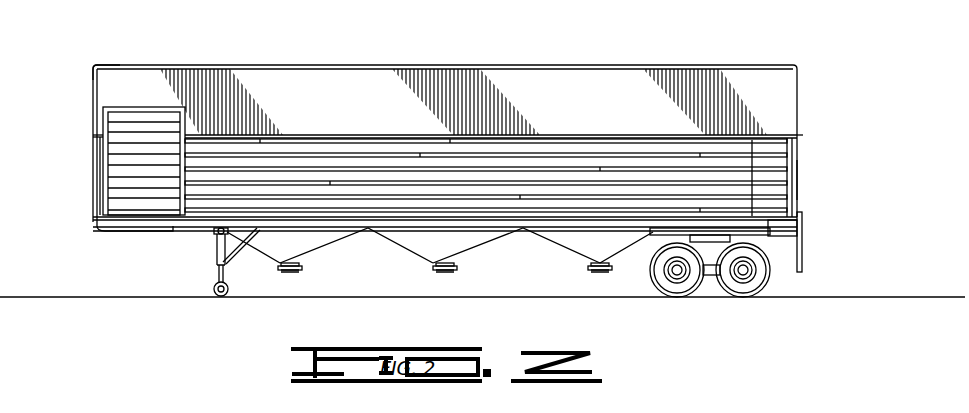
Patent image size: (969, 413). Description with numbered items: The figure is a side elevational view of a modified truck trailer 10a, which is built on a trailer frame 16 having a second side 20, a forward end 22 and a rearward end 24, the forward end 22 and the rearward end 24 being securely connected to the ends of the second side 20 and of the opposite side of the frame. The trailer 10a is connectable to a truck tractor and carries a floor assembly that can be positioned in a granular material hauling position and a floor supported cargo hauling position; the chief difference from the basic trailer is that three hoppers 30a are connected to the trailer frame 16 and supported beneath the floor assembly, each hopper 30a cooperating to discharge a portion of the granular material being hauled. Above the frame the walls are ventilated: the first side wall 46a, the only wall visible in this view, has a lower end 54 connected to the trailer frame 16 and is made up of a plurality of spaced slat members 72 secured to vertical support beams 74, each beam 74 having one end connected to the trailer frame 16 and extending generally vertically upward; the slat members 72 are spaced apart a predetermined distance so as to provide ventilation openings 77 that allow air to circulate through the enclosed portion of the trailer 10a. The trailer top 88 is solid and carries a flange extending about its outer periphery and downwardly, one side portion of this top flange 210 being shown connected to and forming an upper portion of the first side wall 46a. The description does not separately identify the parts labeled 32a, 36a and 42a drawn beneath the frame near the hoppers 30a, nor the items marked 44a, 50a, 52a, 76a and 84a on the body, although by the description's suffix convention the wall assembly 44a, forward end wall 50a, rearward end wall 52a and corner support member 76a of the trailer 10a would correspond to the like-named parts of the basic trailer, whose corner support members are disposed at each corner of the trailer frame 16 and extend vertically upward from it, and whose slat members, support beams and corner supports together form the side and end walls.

The modified trailer 10a is at (275, 58).
The trailer frame 16 is at (793, 226).
The second side 20 is at (552, 223).
The forward end 22 is at (92, 219).
The rearward end 24 is at (783, 222).
The hoppers 30a is at (323, 247).
The brace rod 32a is at (272, 246).
The foot pad 36a is at (277, 268).
The pad base 42a is at (283, 273).
The rear edge 44a is at (805, 142).
The first side wall 46a is at (558, 100).
The front wall 50a is at (75, 152).
The rear wall 52a is at (808, 161).
The lower end 54 is at (198, 214).
The slat members 72 is at (752, 155).
The vertical support beams 74 is at (290, 156).
The corner post 76a is at (98, 173).
The ventilation openings 77 is at (410, 157).
The side door 84a is at (138, 118).
The front top corner 88 is at (171, 54).
The top flange 210 is at (602, 85).